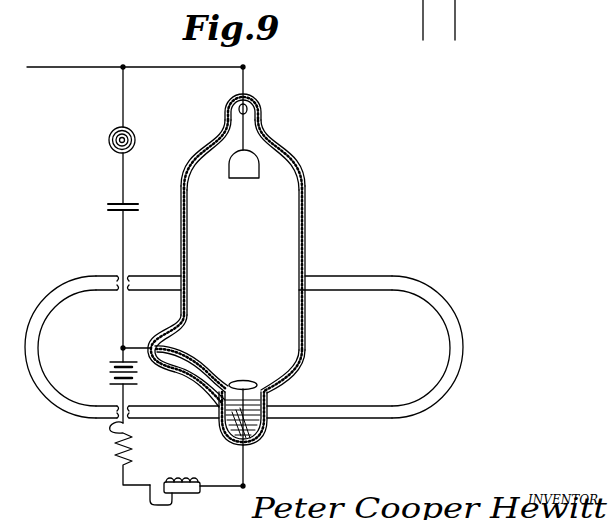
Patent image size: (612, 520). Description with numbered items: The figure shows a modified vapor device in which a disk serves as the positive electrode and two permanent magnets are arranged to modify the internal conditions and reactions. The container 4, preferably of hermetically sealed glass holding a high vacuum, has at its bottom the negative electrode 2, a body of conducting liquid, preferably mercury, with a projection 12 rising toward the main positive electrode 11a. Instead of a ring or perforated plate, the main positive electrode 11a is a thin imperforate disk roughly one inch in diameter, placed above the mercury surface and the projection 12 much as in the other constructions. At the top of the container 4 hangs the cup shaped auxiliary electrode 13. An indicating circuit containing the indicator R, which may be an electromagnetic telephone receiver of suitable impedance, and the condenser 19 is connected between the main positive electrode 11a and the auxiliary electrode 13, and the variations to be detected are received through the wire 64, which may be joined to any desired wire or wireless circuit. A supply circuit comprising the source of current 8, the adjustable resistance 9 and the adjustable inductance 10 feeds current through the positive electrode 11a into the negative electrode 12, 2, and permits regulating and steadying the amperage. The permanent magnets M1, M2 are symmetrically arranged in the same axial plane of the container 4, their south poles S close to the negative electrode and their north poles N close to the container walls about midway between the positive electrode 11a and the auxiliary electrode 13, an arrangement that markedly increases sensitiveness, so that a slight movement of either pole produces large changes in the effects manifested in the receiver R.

The wire 64 is at (136, 107).
The indicator R is at (132, 165).
The condenser 19 is at (137, 273).
The auxiliary electrode 13 is at (244, 180).
The vapor tube envelope 4 is at (305, 222).
The north pole N is at (319, 264).
The permanent magnet M2 is at (122, 347).
The permanent magnet M1 is at (365, 347).
The source of current supply 8 is at (120, 384).
The main positive electrode 11a is at (244, 381).
The projection 12 is at (288, 390).
The south pole S is at (243, 433).
The negative electrode 2 is at (257, 445).
The adjustable resistance 9 is at (130, 453).
The adjustable inductance 10 is at (196, 480).